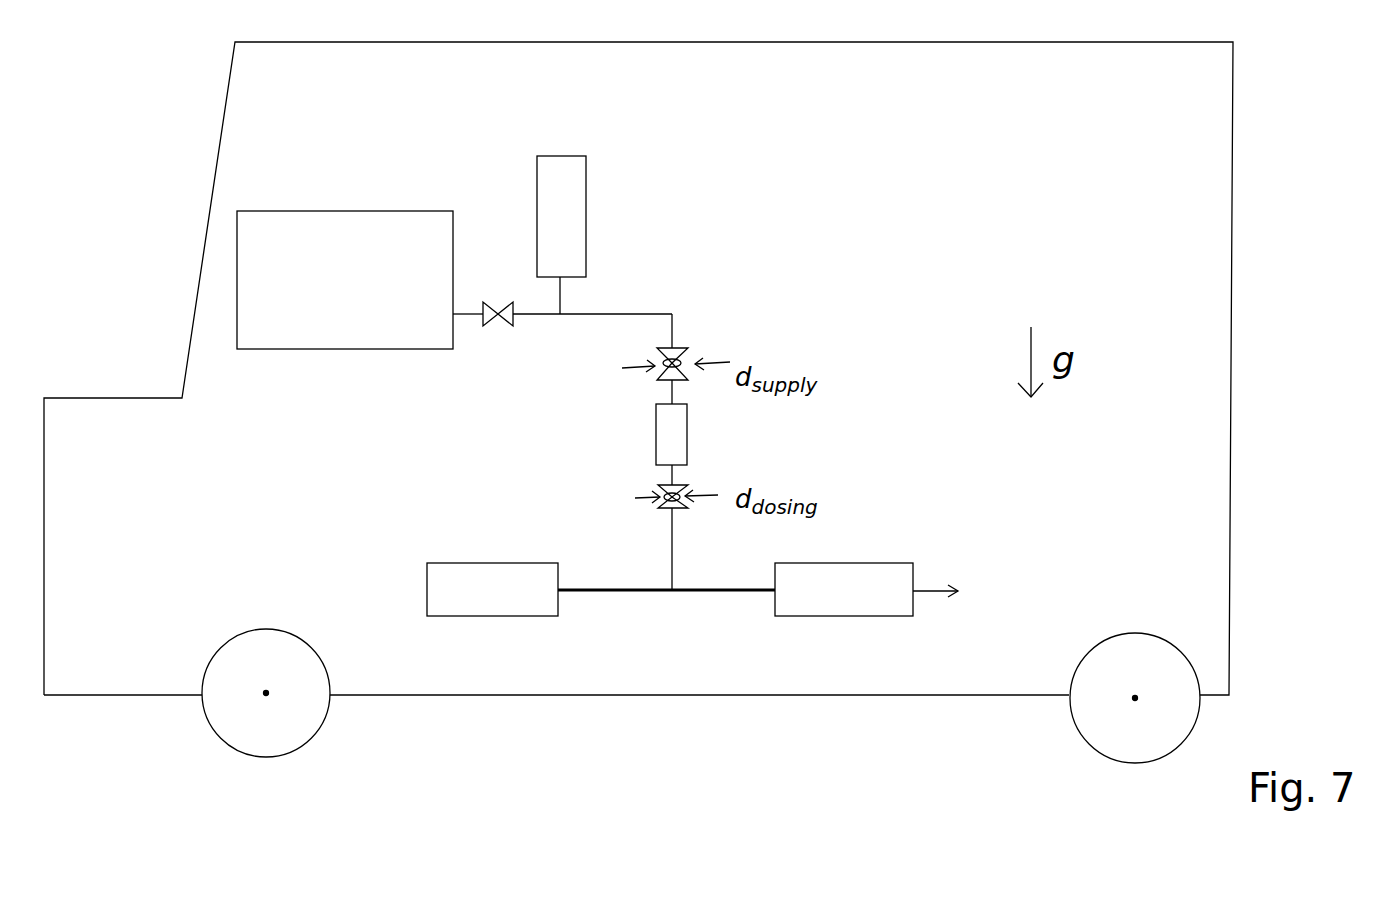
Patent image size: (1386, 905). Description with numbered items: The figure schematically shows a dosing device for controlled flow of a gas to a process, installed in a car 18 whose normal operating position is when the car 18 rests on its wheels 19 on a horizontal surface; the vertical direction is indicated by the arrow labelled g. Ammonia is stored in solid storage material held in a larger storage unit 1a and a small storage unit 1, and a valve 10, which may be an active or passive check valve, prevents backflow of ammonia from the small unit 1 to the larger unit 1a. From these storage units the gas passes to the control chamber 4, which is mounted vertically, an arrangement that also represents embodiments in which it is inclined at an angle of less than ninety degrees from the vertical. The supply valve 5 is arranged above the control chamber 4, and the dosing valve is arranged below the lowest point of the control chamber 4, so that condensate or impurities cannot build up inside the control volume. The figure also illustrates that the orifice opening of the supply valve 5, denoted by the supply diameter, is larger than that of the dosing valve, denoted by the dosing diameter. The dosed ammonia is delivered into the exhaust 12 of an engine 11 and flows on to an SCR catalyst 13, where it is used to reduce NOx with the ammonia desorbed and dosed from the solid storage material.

The larger storage unit 1a is at (358, 293).
The small storage unit 1 is at (573, 243).
The control chamber 4 is at (681, 451).
The supply valve 5 is at (683, 342).
The valve 10 is at (562, 334).
The engine 11 is at (515, 606).
The exhaust 12 is at (710, 593).
The SCR catalyst 13 is at (862, 605).
The car 18 is at (1230, 215).
The wheels 19 is at (313, 718).